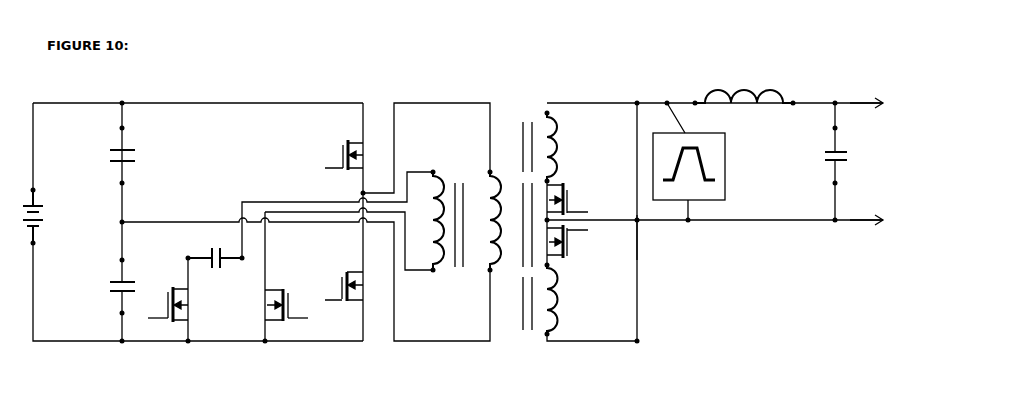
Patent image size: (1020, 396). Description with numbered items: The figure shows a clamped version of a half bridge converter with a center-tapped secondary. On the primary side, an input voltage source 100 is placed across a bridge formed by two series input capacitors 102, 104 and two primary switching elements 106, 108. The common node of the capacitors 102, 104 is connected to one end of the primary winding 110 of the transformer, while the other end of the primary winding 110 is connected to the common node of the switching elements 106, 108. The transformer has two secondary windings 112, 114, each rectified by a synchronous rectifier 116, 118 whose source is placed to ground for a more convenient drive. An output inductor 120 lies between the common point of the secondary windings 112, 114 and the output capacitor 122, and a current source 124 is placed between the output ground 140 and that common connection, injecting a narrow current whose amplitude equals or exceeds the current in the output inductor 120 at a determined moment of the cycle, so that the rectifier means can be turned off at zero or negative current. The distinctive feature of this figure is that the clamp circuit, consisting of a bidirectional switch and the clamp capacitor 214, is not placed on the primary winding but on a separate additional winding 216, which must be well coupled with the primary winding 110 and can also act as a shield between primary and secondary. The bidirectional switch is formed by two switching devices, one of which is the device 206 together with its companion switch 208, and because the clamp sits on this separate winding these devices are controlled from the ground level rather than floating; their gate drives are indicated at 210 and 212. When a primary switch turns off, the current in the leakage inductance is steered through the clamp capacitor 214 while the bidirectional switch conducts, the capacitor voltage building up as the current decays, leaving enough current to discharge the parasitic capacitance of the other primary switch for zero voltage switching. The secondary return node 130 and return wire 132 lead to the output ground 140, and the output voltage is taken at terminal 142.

The input voltage source 100 is at (42, 192).
The input capacitor 102 is at (110, 153).
The input capacitor 104 is at (107, 284).
The primary switching element 106 is at (330, 153).
The primary switching element 108 is at (330, 288).
The primary winding 110 is at (487, 182).
The secondary winding 112 is at (566, 140).
The secondary winding 114 is at (560, 290).
The synchronous rectifier 116 is at (598, 201).
The synchronous rectifier 118 is at (578, 246).
The output inductor 120 is at (740, 83).
The output capacitor 122 is at (824, 146).
The current source 124 is at (727, 187).
The secondary center-tap node 130 is at (638, 221).
The return wire 132 is at (638, 241).
The output ground 140 is at (848, 224).
The output voltage terminal Vo 142 is at (840, 105).
The switching device Q5 206 is at (191, 298).
The auxiliary switch Q3 208 is at (268, 299).
The gate drive of auxiliary switch 210 is at (147, 318).
The gate drive of Q3 212 is at (325, 318).
The clamp capacitor 214 is at (204, 250).
The additional winding 216 is at (440, 258).